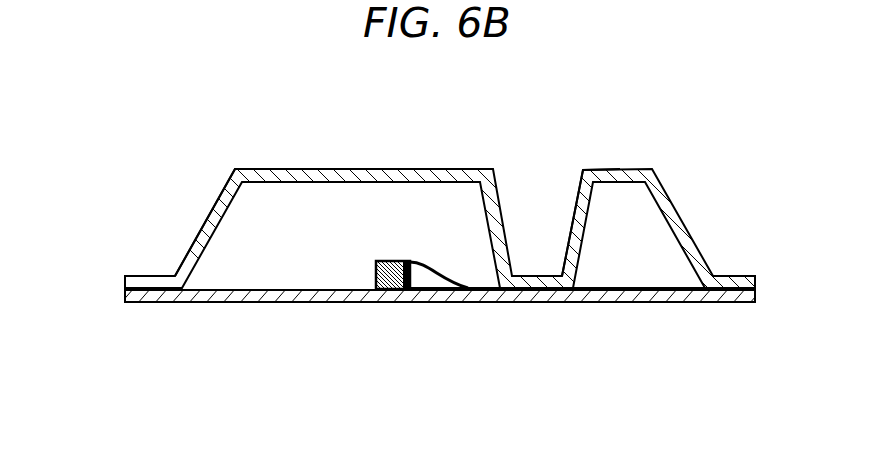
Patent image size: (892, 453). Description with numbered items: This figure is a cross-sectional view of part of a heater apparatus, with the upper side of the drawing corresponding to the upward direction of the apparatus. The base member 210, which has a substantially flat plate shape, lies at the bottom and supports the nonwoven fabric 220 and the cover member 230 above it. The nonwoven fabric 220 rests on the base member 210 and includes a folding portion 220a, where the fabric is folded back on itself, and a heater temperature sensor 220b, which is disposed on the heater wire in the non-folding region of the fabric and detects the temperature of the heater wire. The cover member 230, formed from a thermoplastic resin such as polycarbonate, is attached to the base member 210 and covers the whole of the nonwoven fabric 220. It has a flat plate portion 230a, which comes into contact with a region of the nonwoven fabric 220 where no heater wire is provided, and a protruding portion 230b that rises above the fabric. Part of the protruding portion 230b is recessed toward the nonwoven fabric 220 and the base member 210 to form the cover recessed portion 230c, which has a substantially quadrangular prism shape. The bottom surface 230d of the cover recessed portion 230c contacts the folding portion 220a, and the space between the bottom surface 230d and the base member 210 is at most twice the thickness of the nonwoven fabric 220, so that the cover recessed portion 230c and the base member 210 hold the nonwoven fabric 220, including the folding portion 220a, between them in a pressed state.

The base member 210 is at (587, 302).
The nonwoven fabric 220 is at (635, 288).
The folding portion 220a is at (478, 285).
The heater temperature sensor 220b is at (401, 297).
The cover member 230 is at (423, 167).
The flat plate portion 230a is at (157, 275).
The protruding portion 230b is at (278, 169).
The cover recessed portion 230c is at (578, 192).
The bottom surface 230d is at (560, 290).